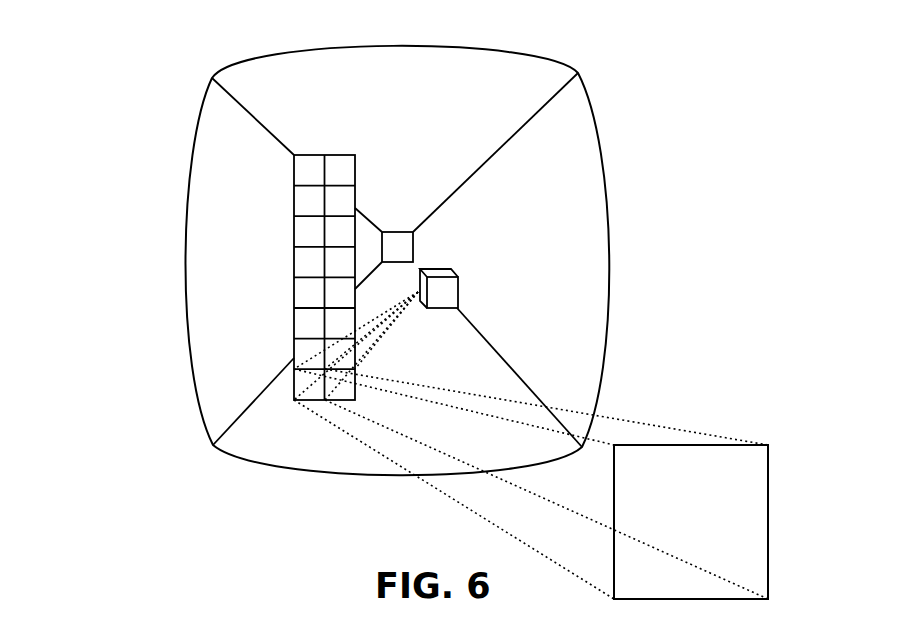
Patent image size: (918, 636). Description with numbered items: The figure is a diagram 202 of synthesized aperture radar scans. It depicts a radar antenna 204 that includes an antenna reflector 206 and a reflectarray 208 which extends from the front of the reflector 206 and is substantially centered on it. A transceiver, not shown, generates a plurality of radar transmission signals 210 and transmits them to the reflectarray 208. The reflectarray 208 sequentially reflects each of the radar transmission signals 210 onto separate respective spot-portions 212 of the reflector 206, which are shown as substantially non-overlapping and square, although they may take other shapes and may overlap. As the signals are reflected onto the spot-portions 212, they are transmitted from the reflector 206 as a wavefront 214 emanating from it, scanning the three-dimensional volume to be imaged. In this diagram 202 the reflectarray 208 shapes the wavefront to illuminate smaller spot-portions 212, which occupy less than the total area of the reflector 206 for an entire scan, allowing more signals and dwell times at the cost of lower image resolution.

The diagram 202 is at (115, 42).
The radar antenna 204 is at (643, 102).
The antenna reflector 206 is at (610, 190).
The reflectarray 208 is at (460, 287).
The radar transmission signals 210 is at (415, 263).
The spot-portions 212 is at (370, 173).
The wavefront 214 is at (614, 498).